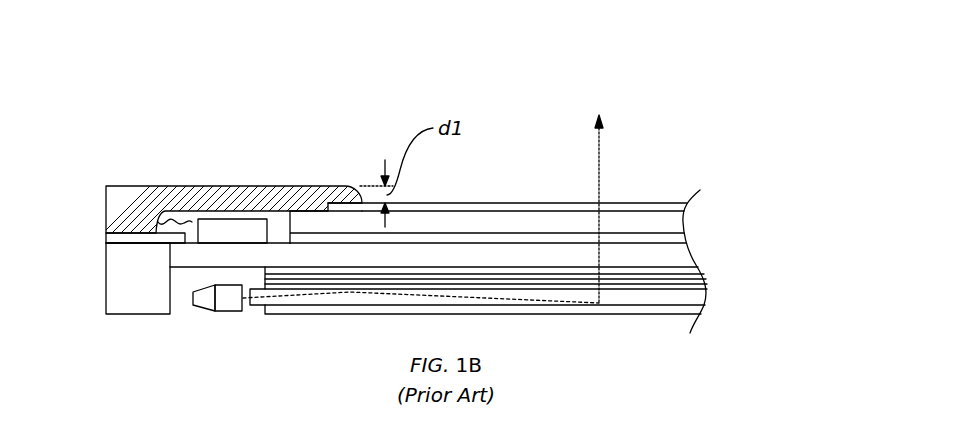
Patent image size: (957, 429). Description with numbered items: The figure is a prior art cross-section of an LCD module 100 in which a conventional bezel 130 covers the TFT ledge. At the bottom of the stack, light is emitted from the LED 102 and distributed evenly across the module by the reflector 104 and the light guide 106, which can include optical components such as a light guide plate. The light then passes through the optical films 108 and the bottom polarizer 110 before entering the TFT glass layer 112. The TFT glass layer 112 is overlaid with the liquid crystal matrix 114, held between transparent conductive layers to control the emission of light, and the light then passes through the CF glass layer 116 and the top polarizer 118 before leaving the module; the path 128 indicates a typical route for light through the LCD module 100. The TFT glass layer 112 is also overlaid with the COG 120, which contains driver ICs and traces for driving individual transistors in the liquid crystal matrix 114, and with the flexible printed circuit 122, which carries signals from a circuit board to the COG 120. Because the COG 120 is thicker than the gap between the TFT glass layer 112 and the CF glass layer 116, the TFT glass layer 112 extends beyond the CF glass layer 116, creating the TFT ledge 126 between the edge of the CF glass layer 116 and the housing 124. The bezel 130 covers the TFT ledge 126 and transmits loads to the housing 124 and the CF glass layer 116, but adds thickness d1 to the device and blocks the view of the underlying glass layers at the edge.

The LCD module 100 is at (133, 77).
The LED 102 is at (215, 310).
The reflector 104 is at (708, 310).
The light guide 106 is at (707, 298).
The optical films 108 is at (705, 283).
The bottom polarizer 110 is at (703, 270).
The TFT glass layer 112 is at (698, 258).
The liquid crystal matrix 114 is at (687, 238).
The CF glass layer 116 is at (687, 220).
The top polarizer 118 is at (648, 203).
The COG 120 is at (233, 219).
The flexible printed circuit 122 is at (105, 238).
The LCD module housing 124 is at (105, 277).
The TFT ledge 126 is at (158, 217).
The path 128 is at (598, 172).
The bezel 130 is at (288, 186).